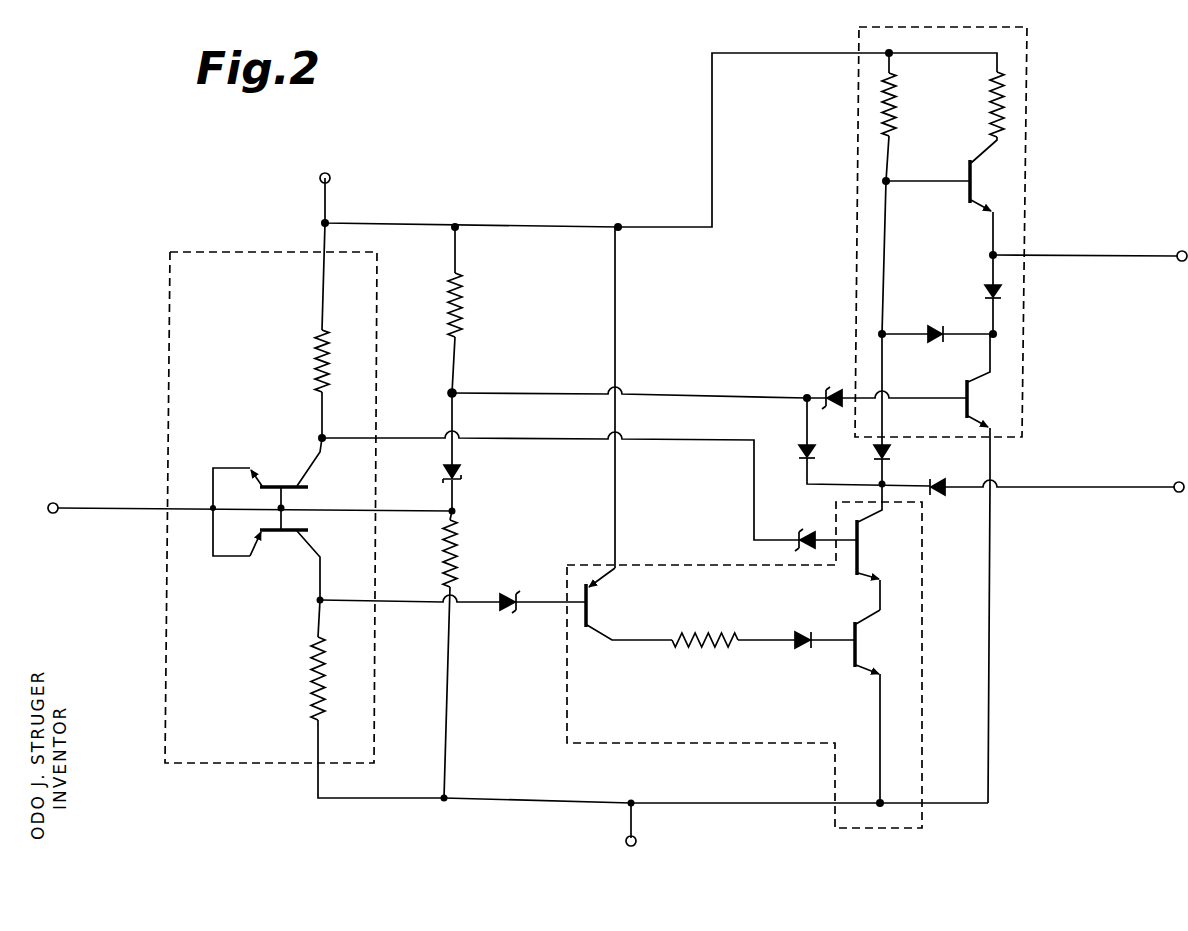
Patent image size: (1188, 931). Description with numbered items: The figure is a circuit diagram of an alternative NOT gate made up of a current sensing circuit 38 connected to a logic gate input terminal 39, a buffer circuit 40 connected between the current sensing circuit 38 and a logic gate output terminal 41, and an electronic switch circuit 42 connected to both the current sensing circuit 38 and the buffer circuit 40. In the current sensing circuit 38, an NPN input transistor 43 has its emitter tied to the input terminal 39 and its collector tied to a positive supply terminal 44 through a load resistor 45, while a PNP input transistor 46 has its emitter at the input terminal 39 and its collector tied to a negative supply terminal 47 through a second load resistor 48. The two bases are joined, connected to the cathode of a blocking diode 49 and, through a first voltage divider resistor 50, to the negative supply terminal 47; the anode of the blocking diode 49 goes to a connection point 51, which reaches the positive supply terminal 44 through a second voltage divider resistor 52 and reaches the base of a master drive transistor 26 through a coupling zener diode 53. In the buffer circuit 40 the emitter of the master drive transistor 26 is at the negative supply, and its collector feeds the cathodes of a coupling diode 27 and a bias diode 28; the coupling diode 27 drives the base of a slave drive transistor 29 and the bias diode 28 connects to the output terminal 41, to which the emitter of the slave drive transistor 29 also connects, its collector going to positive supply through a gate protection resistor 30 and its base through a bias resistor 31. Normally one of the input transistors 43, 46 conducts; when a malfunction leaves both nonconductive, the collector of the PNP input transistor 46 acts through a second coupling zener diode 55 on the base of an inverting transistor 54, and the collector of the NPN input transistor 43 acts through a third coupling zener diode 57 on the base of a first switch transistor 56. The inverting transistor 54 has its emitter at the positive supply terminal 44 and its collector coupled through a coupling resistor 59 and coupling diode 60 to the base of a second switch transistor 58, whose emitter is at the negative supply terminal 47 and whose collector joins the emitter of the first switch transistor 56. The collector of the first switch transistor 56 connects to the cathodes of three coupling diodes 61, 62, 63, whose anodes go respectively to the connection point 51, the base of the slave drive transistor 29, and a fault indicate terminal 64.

The master drive transistor 26 is at (967, 392).
The coupling diode 27 is at (935, 331).
The bias diode 28 is at (984, 290).
The slave drive transistor 29 is at (969, 166).
The gate protection resistor 30 is at (992, 112).
The bias resistor 31 is at (893, 124).
The current sensing circuit 38 is at (165, 308).
The logic gate input terminal 39 is at (56, 500).
The buffer circuit 40 is at (1030, 106).
The logic gate output terminal 41 is at (1183, 251).
The electronic switch circuit 42 is at (924, 711).
The NPN input transistor 43 is at (279, 478).
The positive supply terminal 44 is at (330, 178).
The load resistor 45 is at (316, 354).
The PNP input transistor 46 is at (286, 546).
The negative supply terminal 47 is at (637, 841).
The second load resistor 48 is at (313, 680).
The blocking diode 49 is at (464, 473).
The first voltage divider resistor 50 is at (443, 540).
The connection point 51 is at (450, 392).
The second voltage divider resistor 52 is at (463, 314).
The coupling zener diode 53 is at (828, 392).
The inverting transistor 54 is at (589, 602).
The second coupling zener diode 55 is at (517, 612).
The first switch transistor 56 is at (866, 528).
The third coupling zener diode 57 is at (803, 531).
The second switch transistor 58 is at (860, 623).
The coupling resistor 59 is at (705, 648).
The coupling diode 60 is at (803, 649).
The coupling diode 61 is at (805, 447).
The coupling diode 62 is at (874, 452).
The coupling diode 63 is at (938, 482).
The fault indicate terminal 64 is at (1180, 482).